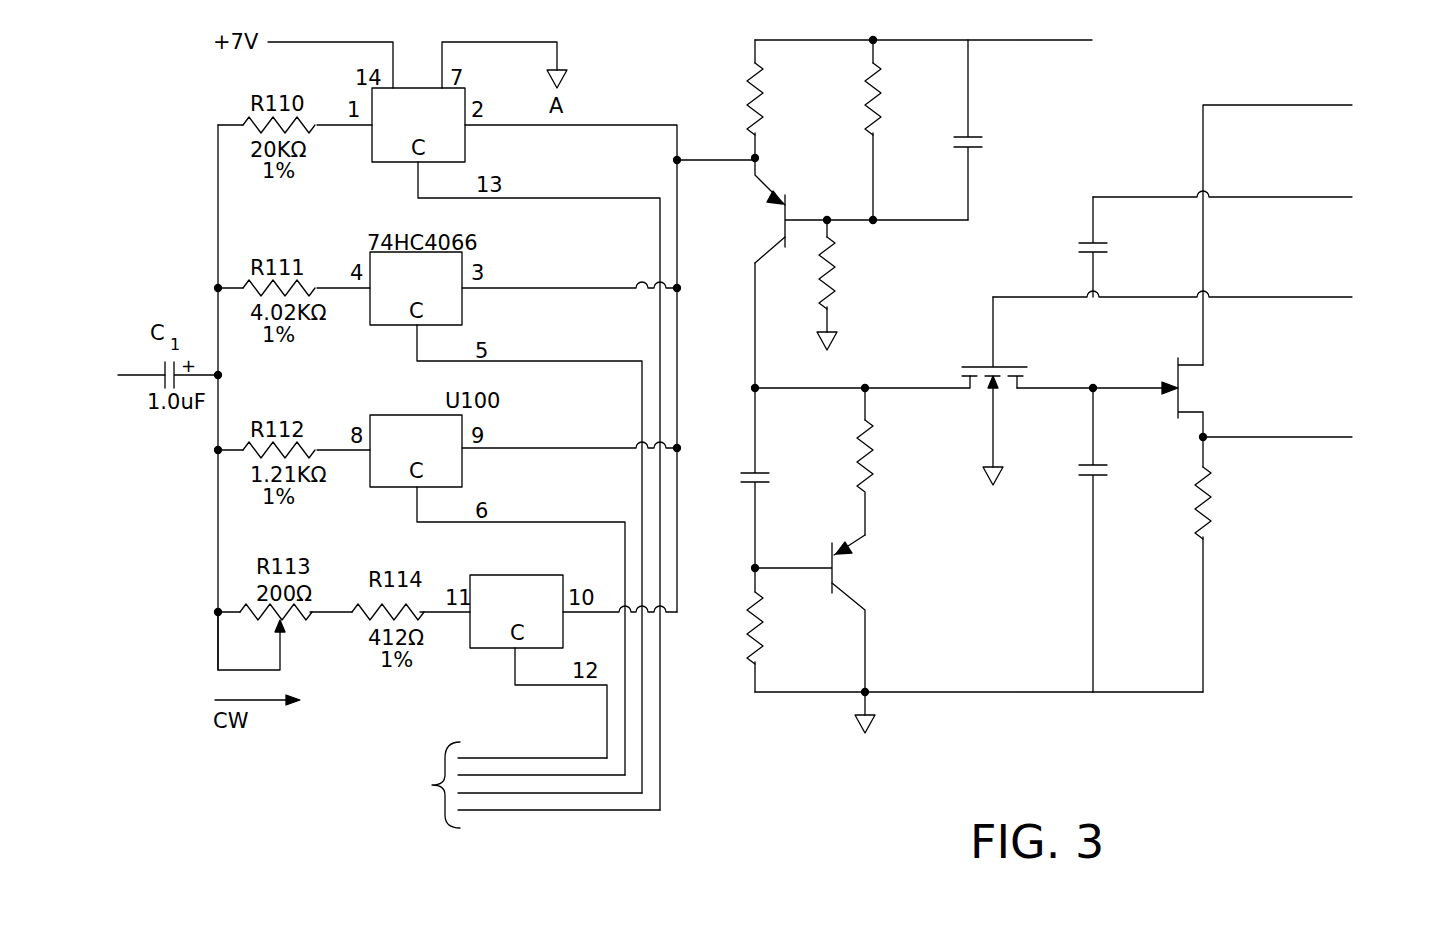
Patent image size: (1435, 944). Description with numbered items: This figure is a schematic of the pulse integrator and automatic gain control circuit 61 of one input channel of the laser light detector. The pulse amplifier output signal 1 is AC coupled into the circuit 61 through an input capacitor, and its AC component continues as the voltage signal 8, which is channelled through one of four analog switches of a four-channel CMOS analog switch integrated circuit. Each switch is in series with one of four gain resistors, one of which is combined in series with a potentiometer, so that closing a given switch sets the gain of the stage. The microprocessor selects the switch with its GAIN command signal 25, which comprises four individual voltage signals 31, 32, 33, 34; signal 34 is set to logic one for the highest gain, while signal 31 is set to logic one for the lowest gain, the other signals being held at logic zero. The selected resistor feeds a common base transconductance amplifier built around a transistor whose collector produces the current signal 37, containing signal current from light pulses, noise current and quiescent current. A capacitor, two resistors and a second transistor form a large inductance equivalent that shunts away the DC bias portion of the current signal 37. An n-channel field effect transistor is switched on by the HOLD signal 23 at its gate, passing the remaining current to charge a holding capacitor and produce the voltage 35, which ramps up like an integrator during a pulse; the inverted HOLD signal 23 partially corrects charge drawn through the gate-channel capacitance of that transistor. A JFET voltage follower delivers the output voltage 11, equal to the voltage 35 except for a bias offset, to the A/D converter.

The pulse amplifier output signal 1 is at (128, 375).
The voltage signal 8 is at (203, 372).
The HOLD signal 23 is at (1408, 152).
The output voltage 11 is at (1328, 437).
The GAIN command signal 25 is at (521, 784).
The voltage signal 31 is at (545, 810).
The voltage signal 32 is at (597, 793).
The voltage signal 33 is at (525, 775).
The voltage signal 34 is at (482, 757).
The voltage 35 is at (1093, 410).
The current signal 37 is at (755, 352).
The pulse integrator and automatic gain control circuit 61 is at (1154, 92).